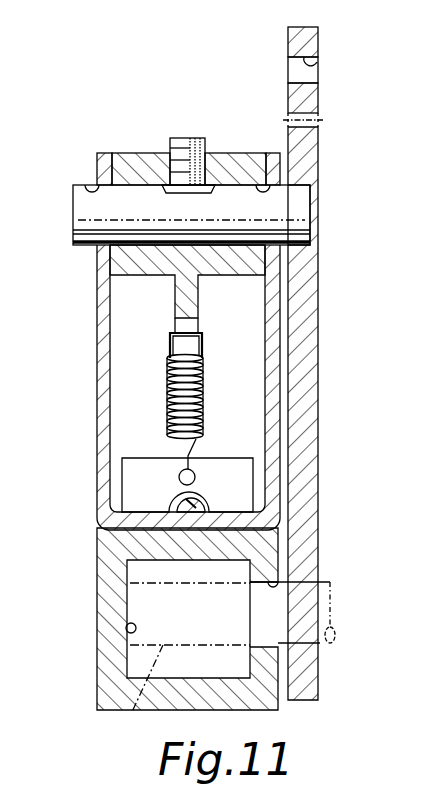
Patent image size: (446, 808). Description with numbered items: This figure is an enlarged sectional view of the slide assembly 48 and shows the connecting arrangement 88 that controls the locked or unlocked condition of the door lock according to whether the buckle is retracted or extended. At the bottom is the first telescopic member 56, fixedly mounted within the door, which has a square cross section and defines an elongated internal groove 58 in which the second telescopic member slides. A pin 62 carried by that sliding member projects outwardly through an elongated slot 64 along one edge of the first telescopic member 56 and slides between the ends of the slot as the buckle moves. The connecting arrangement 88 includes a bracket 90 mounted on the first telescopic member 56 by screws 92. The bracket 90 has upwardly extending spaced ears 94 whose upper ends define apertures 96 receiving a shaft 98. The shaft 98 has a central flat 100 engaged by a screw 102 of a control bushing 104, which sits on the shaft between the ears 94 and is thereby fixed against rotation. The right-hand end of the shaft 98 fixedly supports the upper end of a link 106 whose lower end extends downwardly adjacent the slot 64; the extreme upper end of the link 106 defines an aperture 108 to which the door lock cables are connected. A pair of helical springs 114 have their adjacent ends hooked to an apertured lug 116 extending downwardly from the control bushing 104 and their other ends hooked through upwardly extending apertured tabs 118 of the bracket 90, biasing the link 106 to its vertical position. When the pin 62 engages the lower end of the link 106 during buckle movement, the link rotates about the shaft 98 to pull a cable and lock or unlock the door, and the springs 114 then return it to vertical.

The slide assembly 48 is at (96, 574).
The first telescopic member 56 is at (103, 615).
The internal groove 58 is at (127, 632).
The pin 62 is at (131, 694).
The elongated slot 64 is at (283, 581).
The connecting arrangement 88 is at (322, 150).
The bracket 90 is at (98, 375).
The screws 92 is at (199, 504).
The ears 94 is at (283, 279).
The apertures 96 is at (90, 186).
The shaft 98 is at (138, 192).
The central flat 100 is at (210, 193).
The screw 102 is at (190, 138).
The control bushing 104 is at (155, 272).
The link 106 is at (312, 375).
The aperture 108 is at (318, 61).
The helical springs 114 is at (201, 385).
The apertured lug 116 is at (190, 316).
The apertured tabs 118 is at (212, 462).